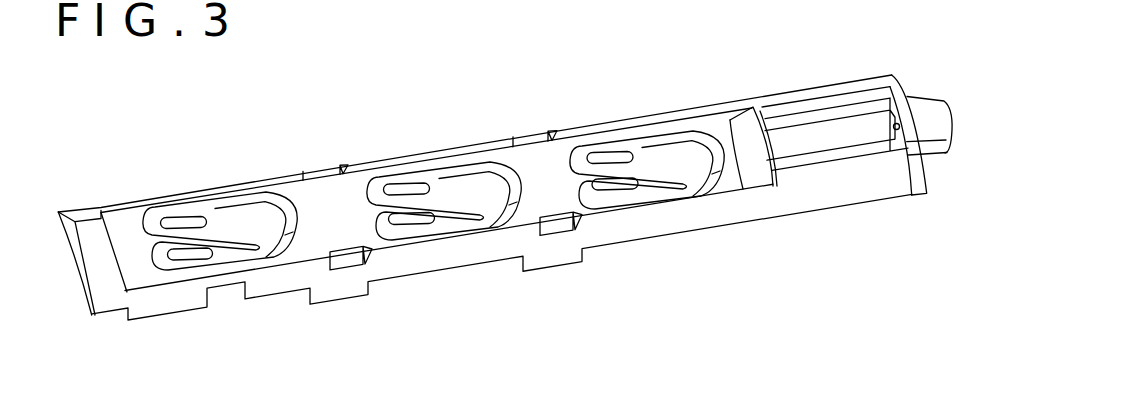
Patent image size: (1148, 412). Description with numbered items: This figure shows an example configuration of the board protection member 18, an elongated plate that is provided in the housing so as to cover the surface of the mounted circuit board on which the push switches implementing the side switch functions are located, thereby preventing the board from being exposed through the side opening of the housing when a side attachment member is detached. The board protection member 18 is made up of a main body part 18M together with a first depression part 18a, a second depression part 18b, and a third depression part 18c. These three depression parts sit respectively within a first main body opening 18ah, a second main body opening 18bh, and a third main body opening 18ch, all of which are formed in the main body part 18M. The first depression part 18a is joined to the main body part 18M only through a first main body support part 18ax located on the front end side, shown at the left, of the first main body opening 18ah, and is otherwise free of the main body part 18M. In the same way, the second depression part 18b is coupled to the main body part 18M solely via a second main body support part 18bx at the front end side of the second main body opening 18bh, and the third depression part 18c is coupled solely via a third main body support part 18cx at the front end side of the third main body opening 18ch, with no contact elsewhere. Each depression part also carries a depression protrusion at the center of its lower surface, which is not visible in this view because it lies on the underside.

The board protection member 18 is at (481, 108).
The main body part 18M is at (300, 198).
The first depression part 18a is at (252, 235).
The first main body opening 18ah is at (153, 223).
The first main body support part 18ax is at (167, 240).
The second depression part 18b is at (475, 205).
The second main body opening 18bh is at (379, 192).
The second main body support part 18bx is at (390, 208).
The third depression part 18c is at (676, 165).
The third main body opening 18ch is at (581, 161).
The third main body support part 18cx is at (599, 175).